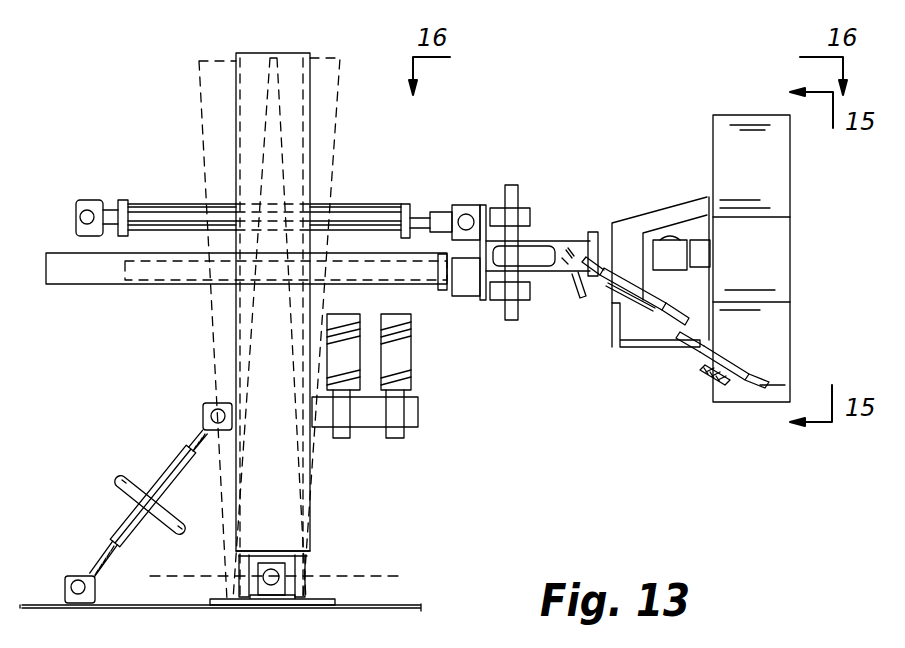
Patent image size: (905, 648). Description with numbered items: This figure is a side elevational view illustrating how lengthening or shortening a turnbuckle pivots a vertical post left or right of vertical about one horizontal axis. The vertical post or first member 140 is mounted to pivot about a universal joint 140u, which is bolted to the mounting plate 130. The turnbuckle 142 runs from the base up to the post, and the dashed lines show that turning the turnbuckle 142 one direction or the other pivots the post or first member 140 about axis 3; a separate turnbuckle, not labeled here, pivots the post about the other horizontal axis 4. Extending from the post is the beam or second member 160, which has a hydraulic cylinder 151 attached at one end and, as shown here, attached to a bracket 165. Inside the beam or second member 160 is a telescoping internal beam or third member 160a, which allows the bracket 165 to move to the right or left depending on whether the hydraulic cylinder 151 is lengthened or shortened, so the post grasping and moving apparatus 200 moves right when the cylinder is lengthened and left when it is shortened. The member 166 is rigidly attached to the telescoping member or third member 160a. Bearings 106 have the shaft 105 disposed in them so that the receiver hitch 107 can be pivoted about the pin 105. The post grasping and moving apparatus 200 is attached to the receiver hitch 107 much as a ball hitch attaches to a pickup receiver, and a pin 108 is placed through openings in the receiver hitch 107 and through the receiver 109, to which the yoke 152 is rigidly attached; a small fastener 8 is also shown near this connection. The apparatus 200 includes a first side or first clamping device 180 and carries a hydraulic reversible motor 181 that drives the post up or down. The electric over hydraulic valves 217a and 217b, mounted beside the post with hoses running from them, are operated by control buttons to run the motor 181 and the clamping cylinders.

The axis 3 is at (272, 577).
The axis 4 is at (408, 576).
The fastener 8 is at (568, 259).
The shaft 105 is at (490, 207).
The bearings 106 is at (503, 225).
The receiver hitch 107 is at (548, 278).
The pin 108 is at (585, 298).
The receiver 109 is at (612, 222).
The mounting plate 130 is at (410, 604).
The vertical post or first member 140 is at (312, 108).
The universal joint 140u is at (240, 574).
The turnbuckle 142 is at (125, 489).
The hydraulic cylinder 151 is at (356, 200).
The yoke 152 is at (682, 200).
The beam or second member 160 is at (68, 276).
The telescoping internal beam or third member 160a is at (478, 300).
The bracket 165 is at (472, 264).
The member 166 is at (487, 200).
The first side or first clamping device 180 is at (780, 363).
The hydraulic reversible motor 181 is at (660, 348).
The post grasping and moving apparatus 200 is at (716, 102).
The electric over hydraulic valve 217a is at (360, 350).
The electric over hydraulic valve 217b is at (345, 392).